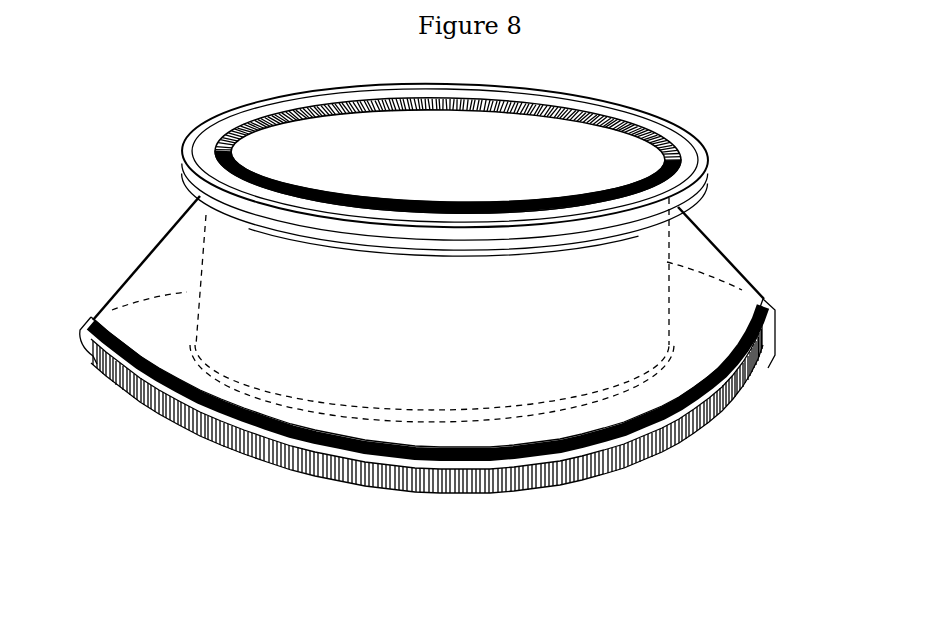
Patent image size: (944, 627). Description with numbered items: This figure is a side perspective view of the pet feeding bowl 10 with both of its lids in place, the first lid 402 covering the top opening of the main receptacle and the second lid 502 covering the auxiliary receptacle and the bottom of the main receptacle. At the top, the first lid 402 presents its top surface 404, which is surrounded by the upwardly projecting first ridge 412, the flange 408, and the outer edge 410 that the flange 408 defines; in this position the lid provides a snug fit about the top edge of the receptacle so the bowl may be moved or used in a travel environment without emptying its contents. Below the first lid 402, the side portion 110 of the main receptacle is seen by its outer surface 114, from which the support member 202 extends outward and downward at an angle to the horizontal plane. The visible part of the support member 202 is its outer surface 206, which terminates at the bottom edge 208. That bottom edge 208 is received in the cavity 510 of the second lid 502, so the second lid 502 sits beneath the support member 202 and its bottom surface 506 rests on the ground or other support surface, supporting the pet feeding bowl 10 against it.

The pet feeding bowl 10 is at (100, 122).
The side portion 110 is at (233, 283).
The outer surface 114 is at (460, 329).
The support member 202 is at (739, 275).
The outer surface 206 is at (722, 340).
The bottom edge 208 is at (92, 358).
The first lid 402 is at (620, 84).
The top surface 404 is at (463, 175).
The flange 408 is at (697, 158).
The outer edge 410 is at (703, 174).
The first ridge 412 is at (238, 132).
The second lid 502 is at (173, 493).
The bottom surface 506 is at (450, 506).
The cavity 510 is at (140, 383).